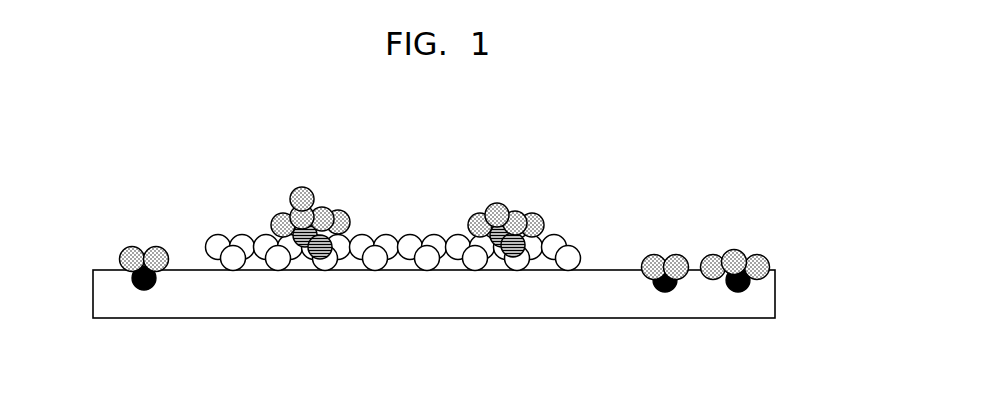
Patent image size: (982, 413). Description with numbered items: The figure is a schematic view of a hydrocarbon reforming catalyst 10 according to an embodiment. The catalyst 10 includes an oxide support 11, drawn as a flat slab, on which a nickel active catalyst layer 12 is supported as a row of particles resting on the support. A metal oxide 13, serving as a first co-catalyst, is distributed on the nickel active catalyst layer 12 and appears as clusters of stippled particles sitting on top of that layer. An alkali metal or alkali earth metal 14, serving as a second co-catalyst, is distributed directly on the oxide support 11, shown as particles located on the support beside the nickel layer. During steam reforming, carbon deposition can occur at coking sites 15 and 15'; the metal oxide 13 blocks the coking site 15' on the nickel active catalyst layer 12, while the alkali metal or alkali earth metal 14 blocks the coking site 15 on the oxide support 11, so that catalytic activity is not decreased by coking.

The hydrocarbon reforming catalyst 10 is at (664, 160).
The oxide support 11 is at (605, 316).
The nickel active catalyst layer 12 is at (573, 250).
The metal oxide 13 is at (499, 205).
The alkali metal or alkali earth metal 14 is at (733, 252).
The coking site 15 is at (456, 253).
The coking site 15' is at (424, 218).